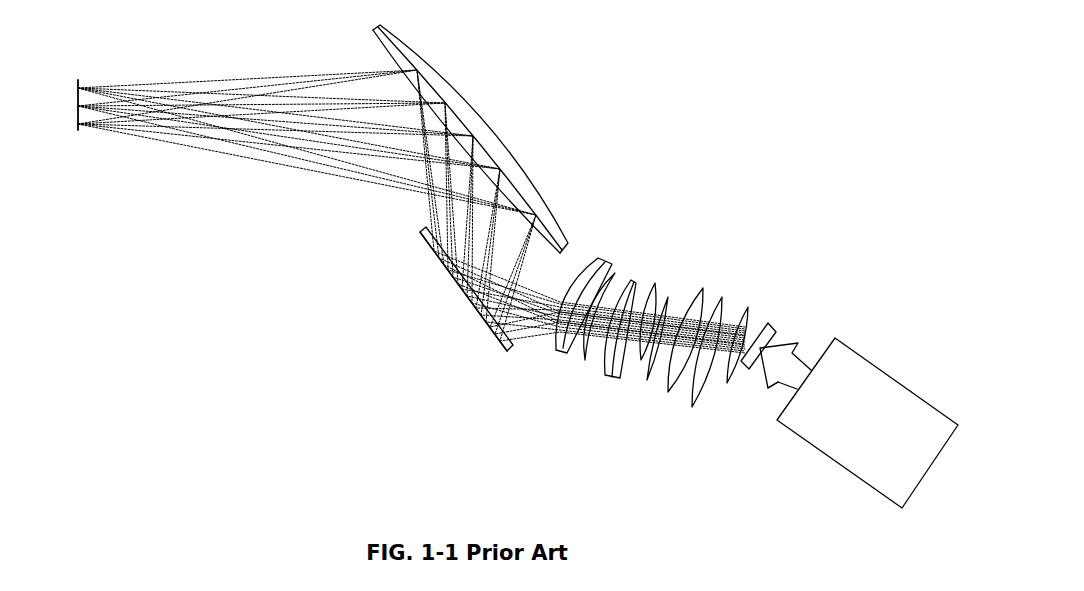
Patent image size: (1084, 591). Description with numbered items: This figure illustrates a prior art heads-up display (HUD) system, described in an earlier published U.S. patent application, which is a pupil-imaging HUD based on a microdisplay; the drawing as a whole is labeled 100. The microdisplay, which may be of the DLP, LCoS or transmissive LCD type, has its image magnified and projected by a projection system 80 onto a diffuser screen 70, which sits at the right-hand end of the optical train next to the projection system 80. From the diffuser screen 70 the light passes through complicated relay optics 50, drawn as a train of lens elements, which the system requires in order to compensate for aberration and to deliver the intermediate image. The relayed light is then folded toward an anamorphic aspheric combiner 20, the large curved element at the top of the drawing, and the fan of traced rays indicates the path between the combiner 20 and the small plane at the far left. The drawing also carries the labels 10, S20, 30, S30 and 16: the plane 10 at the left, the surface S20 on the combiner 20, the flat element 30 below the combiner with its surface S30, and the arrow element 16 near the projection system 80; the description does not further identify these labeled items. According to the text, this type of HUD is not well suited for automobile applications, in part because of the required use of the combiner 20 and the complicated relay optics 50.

The projection optical system (prior art) 100 is at (701, 89).
The object plane / image display element 10 is at (76, 98).
The anamorphic aspheric combiner 20 is at (450, 90).
The reflecting surface of concave mirror S20 is at (450, 108).
The flat mirror 30 is at (422, 236).
The reflecting surface of flat mirror S30 is at (493, 318).
The relay optics 50 is at (595, 230).
The diffuser screen 70 is at (770, 324).
The arrow indicating light direction 16 is at (763, 377).
The projection system 80 is at (850, 343).